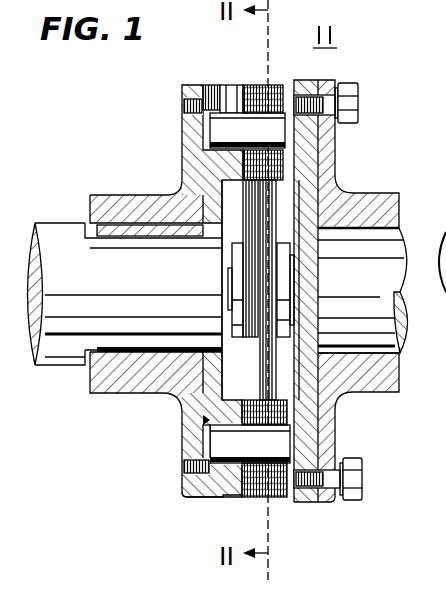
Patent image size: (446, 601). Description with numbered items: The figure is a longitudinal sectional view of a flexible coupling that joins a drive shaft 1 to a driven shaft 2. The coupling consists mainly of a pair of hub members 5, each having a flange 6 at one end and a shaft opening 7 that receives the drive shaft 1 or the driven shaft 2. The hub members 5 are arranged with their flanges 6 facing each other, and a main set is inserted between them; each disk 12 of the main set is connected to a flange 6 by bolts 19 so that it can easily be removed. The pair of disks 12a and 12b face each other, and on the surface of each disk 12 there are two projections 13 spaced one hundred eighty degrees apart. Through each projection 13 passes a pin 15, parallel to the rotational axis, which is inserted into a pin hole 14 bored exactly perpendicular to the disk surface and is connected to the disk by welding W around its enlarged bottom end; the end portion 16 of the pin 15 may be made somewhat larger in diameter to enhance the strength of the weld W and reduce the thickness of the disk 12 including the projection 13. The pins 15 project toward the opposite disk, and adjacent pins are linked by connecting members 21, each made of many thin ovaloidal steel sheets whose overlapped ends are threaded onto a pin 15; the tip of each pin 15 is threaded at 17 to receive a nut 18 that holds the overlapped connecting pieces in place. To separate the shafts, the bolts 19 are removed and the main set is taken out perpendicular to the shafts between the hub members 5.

The drive shaft 1 is at (66, 368).
The driven shaft 2 is at (408, 345).
The hub member 5 is at (115, 193).
The flange 6 is at (184, 134).
The shaft opening 7 is at (153, 350).
The annular disk 12 is at (213, 86).
The disk 12a is at (200, 182).
The disk 12b is at (305, 173).
The projection 13 is at (236, 498).
The pin hole 14 is at (232, 470).
The pin 15 is at (200, 467).
The end portion 16 is at (203, 448).
The threaded tip 17 is at (318, 443).
The nut 18 is at (287, 495).
The bolt 19 is at (183, 104).
The connecting member 21 is at (265, 366).
The weld W is at (203, 420).